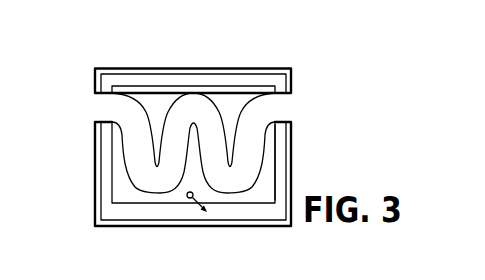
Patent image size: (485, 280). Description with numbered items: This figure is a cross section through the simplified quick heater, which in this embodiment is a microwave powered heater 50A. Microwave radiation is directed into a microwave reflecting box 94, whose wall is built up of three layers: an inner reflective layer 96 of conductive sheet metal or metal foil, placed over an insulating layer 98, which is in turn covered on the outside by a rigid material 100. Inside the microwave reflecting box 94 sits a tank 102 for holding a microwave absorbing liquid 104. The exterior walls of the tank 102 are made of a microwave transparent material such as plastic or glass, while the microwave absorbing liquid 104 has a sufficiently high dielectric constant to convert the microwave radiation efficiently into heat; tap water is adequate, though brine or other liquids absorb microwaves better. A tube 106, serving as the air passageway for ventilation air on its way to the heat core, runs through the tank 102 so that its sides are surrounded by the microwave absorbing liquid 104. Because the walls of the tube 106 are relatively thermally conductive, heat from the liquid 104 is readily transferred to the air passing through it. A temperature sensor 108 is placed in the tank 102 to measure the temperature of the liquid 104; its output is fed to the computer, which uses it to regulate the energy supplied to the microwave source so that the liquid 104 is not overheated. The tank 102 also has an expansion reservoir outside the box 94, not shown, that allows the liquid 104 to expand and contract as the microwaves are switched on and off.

The microwave powered heater 50A is at (329, 50).
The microwave reflecting box 94 is at (259, 50).
The inner reflective layer 96 is at (122, 69).
The insulating layer 98 is at (158, 69).
The rigid material 100 is at (205, 69).
The tank 102 is at (230, 203).
The microwave absorbing liquid 104 is at (265, 192).
The tube 106 is at (137, 194).
The temperature sensor 108 is at (187, 198).